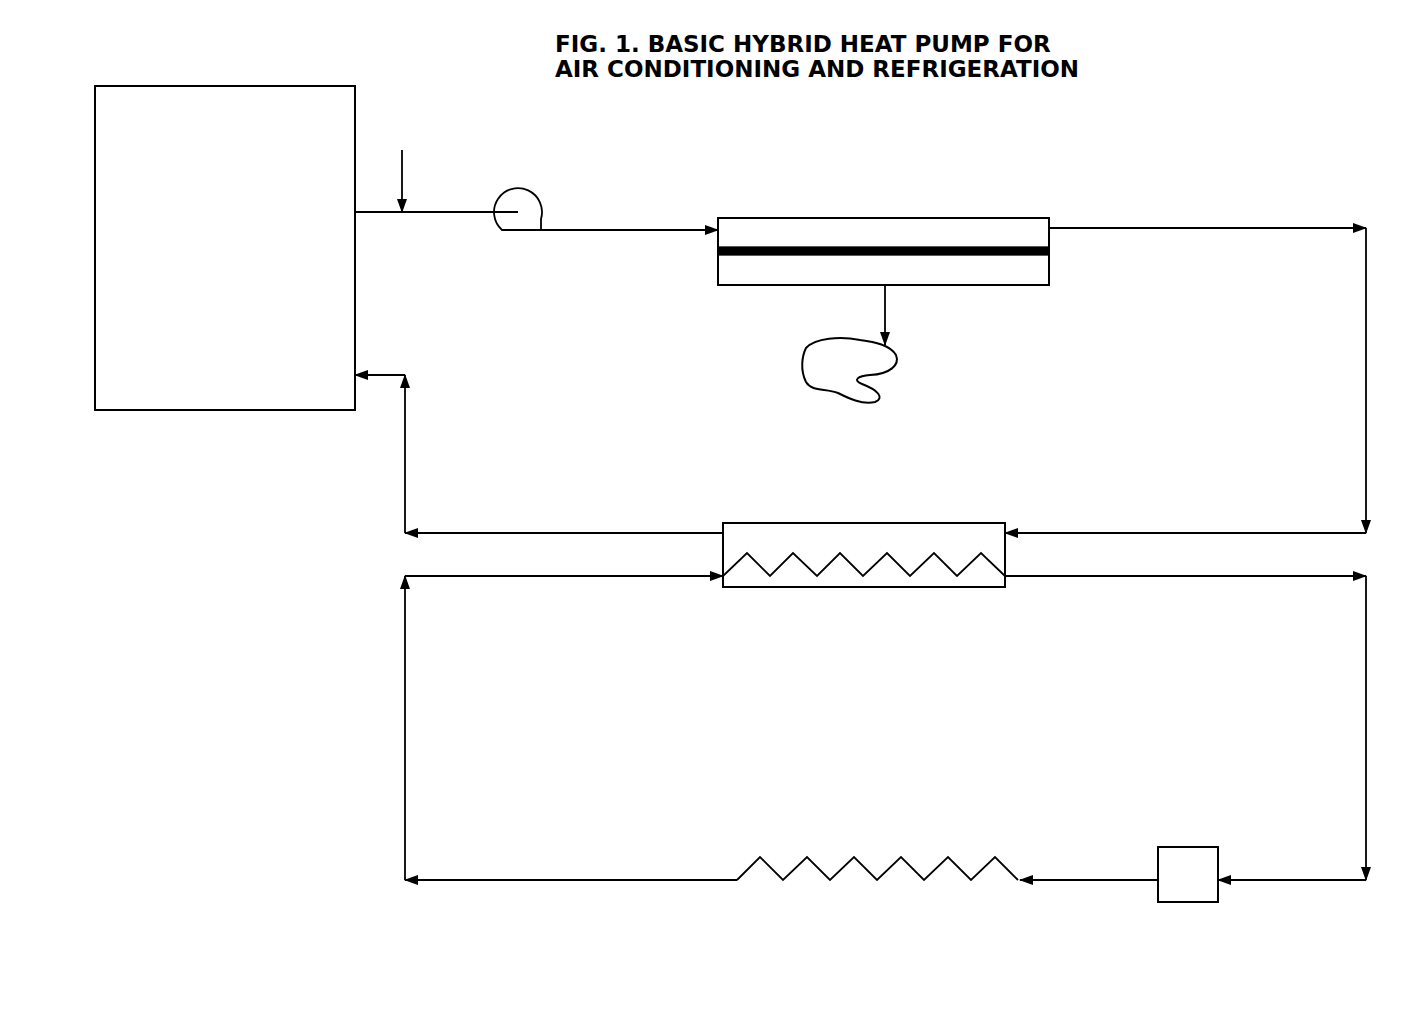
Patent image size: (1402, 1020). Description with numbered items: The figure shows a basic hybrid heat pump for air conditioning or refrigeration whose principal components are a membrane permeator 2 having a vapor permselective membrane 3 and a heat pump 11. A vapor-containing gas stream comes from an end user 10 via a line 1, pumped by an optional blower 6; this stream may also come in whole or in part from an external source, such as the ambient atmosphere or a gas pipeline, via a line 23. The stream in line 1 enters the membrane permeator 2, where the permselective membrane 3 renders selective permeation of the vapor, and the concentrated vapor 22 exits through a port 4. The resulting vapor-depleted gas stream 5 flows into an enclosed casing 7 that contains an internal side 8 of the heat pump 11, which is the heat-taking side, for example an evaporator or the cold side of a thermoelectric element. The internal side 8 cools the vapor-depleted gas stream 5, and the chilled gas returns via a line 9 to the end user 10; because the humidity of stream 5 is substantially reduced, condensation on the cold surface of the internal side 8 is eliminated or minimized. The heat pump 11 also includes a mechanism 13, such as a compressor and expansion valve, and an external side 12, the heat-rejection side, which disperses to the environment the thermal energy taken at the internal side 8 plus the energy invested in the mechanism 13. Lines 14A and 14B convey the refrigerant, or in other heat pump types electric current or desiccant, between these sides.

The line 1 is at (637, 230).
The membrane permeator 2 is at (800, 217).
The vapor permselective membrane 3 is at (978, 247).
The port 4 is at (888, 318).
The vapor-depleted gas stream 5 is at (1153, 227).
The blower 6 is at (517, 198).
The enclosed casing 7 is at (945, 522).
The internal side 8 is at (880, 565).
The line 9 is at (603, 532).
The end user 10 is at (225, 248).
The heat pump 11 is at (885, 646).
The external side 12 is at (795, 863).
The mechanism 13 is at (1203, 845).
The line 14A is at (405, 660).
The line 14B is at (1366, 715).
The concentrated vapor 22 is at (849, 370).
The line 23 is at (402, 150).